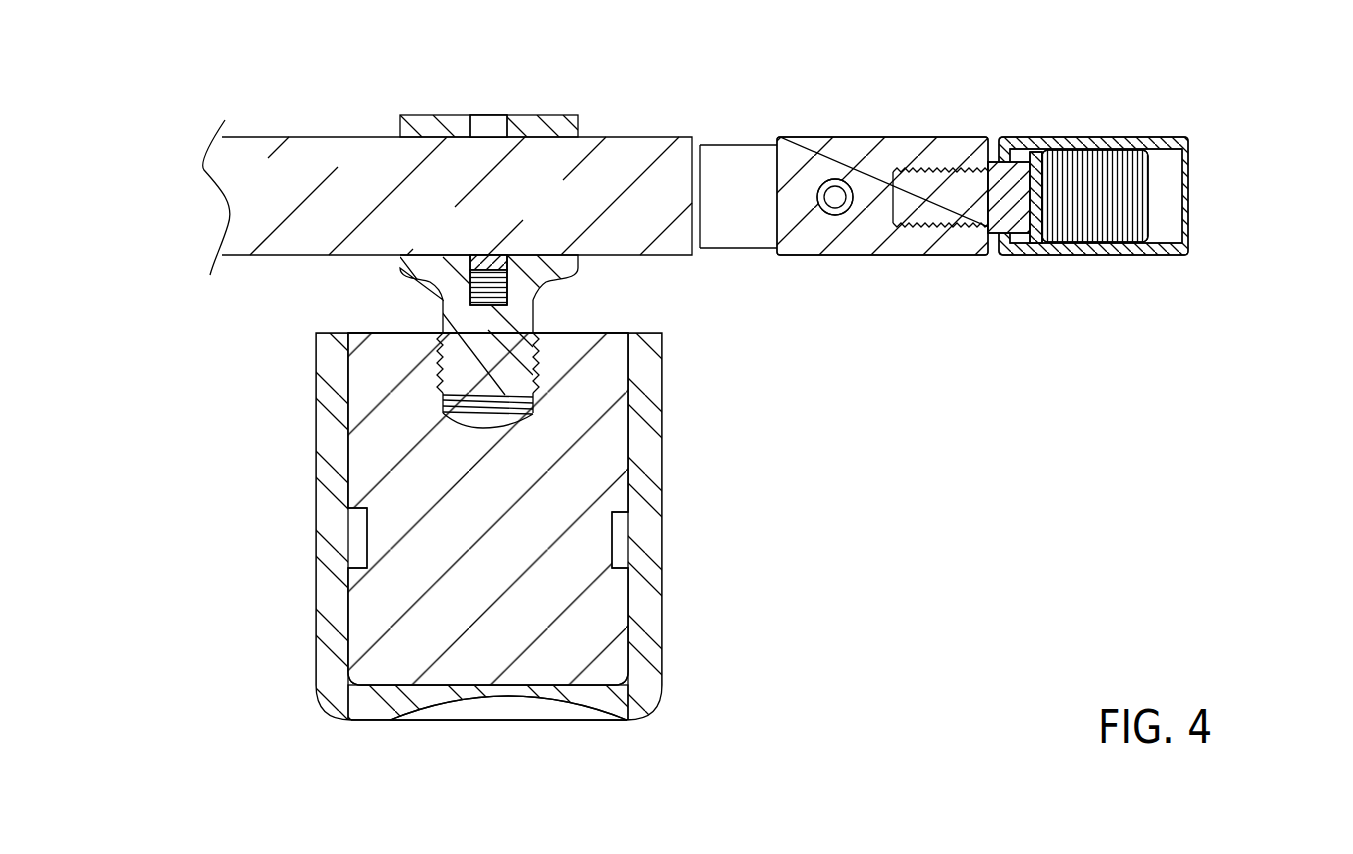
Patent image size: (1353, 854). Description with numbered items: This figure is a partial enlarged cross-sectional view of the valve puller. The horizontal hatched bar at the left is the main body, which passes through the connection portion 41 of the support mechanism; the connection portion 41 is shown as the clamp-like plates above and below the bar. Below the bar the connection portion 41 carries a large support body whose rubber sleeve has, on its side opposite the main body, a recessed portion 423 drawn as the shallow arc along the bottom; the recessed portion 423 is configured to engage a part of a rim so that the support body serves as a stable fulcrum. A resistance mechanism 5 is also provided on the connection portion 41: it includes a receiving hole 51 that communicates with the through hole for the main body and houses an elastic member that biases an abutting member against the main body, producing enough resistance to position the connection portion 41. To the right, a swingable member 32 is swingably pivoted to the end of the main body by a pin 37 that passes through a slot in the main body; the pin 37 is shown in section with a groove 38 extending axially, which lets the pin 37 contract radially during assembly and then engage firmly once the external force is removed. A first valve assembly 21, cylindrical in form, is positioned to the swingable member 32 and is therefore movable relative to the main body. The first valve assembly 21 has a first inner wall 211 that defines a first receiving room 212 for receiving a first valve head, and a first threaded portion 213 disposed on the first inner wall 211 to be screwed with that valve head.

The resistance mechanism 5 is at (447, 283).
The receiving hole 51 is at (545, 297).
The connection portion 41 is at (557, 115).
The recessed portion 423 is at (500, 712).
The swingable member 32 is at (952, 255).
The pin 37 is at (832, 215).
The groove 38 is at (834, 183).
The first valve assembly 21 is at (1151, 150).
The first inner wall 211 is at (1163, 195).
The first receiving room 212 is at (1133, 222).
The first threaded portion 213 is at (1108, 148).